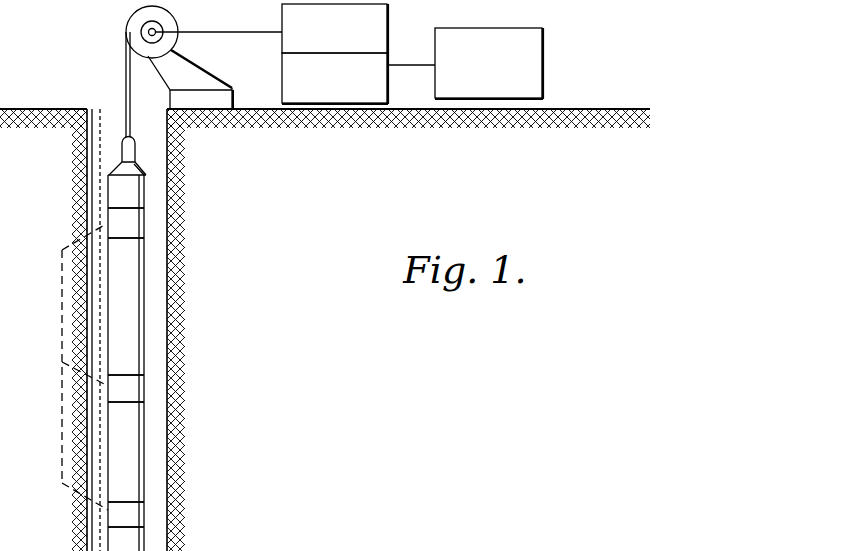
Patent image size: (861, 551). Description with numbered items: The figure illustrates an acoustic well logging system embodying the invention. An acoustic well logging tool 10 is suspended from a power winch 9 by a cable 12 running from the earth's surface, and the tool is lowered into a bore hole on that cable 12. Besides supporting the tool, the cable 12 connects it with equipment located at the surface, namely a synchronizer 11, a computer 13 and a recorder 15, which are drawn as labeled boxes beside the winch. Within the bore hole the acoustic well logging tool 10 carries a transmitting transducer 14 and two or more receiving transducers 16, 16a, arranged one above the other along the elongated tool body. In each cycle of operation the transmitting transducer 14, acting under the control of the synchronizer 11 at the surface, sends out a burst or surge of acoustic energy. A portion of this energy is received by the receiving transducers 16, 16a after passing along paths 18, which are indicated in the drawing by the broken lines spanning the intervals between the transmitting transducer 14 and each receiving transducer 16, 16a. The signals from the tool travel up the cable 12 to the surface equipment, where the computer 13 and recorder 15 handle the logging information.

The power winch 9 is at (133, 18).
The acoustic well logging tool 10 is at (104, 206).
The synchronizer 11 is at (282, 16).
The cable 12 is at (125, 83).
The computer 13 is at (282, 66).
The transmitting transducer 14 is at (144, 227).
The recorder 15 is at (545, 52).
The receiving transducer 16 is at (144, 393).
The receiving transducer 16a is at (144, 515).
The paths 18 is at (62, 318).